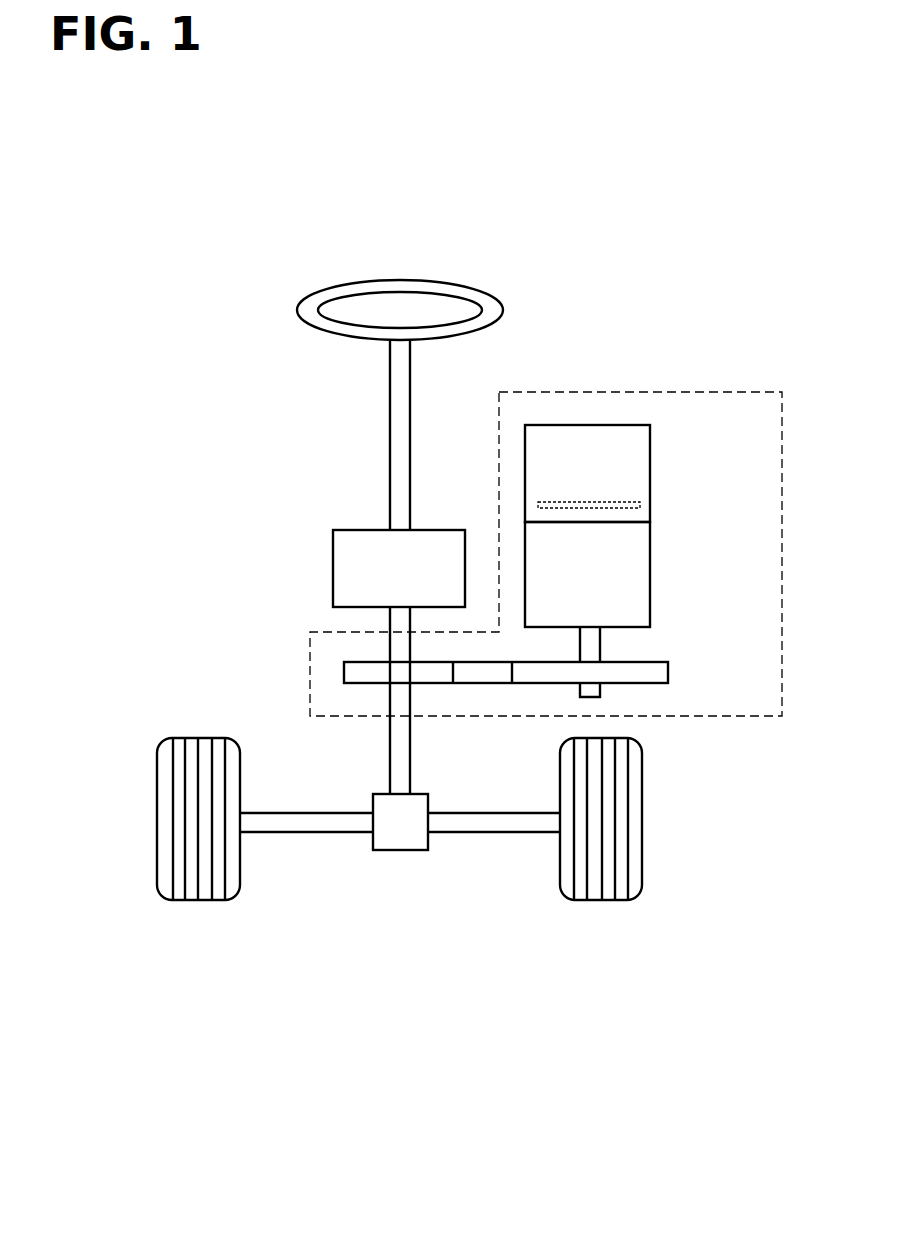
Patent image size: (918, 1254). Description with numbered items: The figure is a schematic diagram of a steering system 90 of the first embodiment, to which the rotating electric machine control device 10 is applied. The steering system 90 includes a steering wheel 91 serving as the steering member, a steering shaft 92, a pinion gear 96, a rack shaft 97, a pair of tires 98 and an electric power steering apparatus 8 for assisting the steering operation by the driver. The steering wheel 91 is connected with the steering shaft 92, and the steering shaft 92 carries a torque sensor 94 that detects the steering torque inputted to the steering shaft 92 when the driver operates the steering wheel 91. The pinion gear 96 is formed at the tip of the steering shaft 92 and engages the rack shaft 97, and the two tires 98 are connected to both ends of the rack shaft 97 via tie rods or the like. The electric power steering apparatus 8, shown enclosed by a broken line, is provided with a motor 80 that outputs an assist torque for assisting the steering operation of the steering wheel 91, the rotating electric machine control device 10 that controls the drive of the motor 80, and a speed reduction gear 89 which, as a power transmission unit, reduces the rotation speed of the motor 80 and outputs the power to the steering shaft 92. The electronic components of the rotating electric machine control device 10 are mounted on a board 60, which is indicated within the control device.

The electric power steering apparatus 8 is at (750, 392).
The rotating electric machine control device 10 is at (650, 456).
The board 60 is at (640, 505).
The motor 80 is at (650, 576).
The speed reduction gear 89 is at (668, 671).
The steering system 90 is at (363, 975).
The steering wheel 91 is at (296, 312).
The steering shaft 92 is at (390, 392).
The torque sensor 94 is at (333, 560).
The pinion gear 96 is at (392, 850).
The rack shaft 97 is at (300, 832).
The tire 98 is at (215, 900).